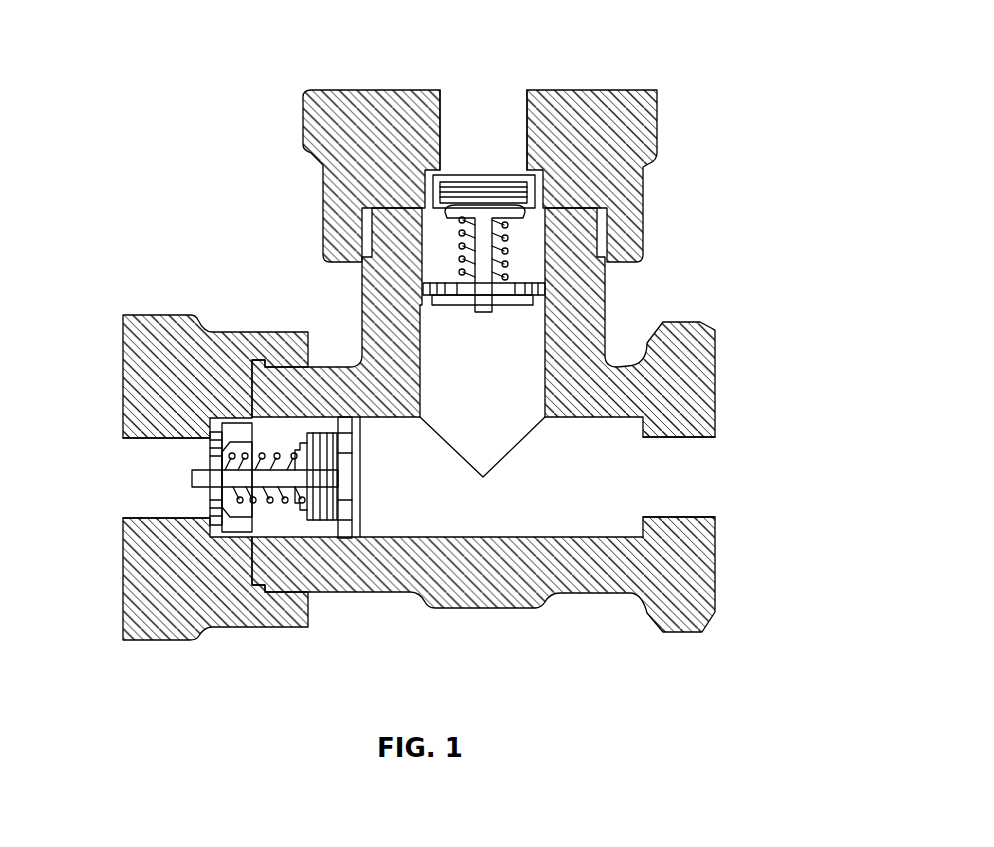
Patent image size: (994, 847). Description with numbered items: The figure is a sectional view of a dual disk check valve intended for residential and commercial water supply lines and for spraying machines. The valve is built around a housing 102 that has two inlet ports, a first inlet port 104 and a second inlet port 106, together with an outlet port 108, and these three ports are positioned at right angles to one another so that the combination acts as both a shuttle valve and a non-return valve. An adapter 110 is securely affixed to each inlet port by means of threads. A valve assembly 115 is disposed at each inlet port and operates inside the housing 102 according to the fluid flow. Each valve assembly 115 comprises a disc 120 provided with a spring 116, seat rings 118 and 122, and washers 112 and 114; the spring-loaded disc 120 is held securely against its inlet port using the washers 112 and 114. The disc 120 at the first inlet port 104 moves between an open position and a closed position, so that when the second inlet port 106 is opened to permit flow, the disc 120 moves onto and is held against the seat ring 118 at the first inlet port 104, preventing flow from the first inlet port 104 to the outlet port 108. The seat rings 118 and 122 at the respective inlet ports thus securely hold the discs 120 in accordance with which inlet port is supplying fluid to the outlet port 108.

The housing 102 is at (683, 367).
The first inlet port 104 is at (146, 480).
The second inlet port 106 is at (487, 108).
The outlet port 108 is at (701, 498).
The adapter 110 is at (612, 117).
The washer 112 is at (518, 292).
The washer 114 is at (200, 500).
The valve assembly 115 is at (462, 188).
The spring 116 is at (505, 235).
The seat ring 118 is at (327, 533).
The disc 120 is at (550, 212).
The seat ring 122 is at (517, 180).